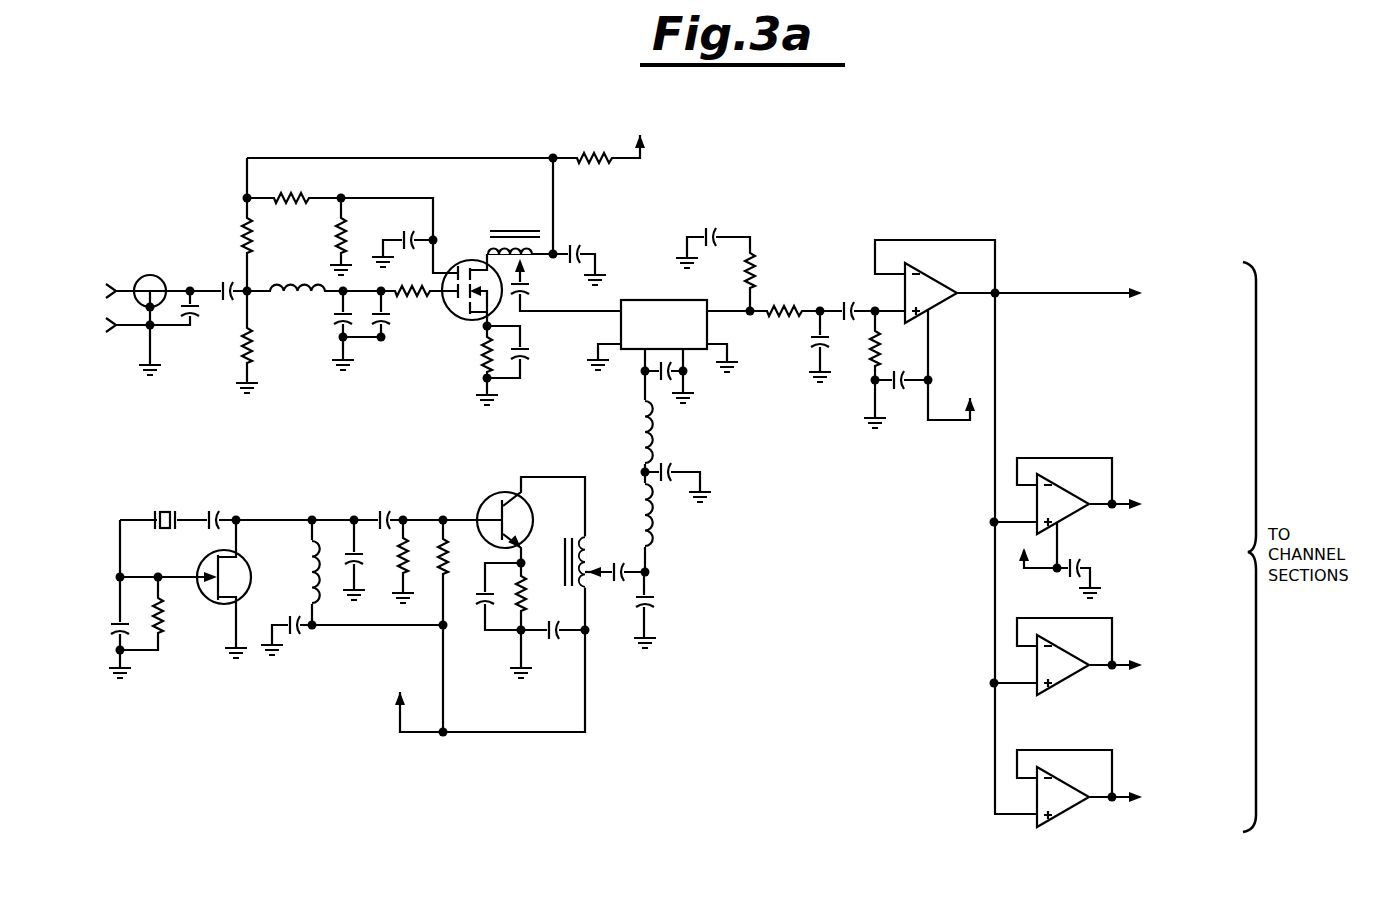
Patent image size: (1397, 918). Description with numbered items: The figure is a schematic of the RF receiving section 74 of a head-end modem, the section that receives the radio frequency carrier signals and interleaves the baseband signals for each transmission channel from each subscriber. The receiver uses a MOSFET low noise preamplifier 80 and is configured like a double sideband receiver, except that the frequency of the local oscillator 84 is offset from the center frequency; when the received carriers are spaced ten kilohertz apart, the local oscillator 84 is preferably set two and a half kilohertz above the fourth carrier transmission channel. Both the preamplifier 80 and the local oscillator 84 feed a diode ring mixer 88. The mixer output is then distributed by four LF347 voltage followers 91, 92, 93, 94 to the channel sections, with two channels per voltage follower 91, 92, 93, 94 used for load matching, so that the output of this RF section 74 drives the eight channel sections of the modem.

The MOSFET low noise preamplifier 80 is at (398, 360).
The local oscillator 84 is at (198, 712).
The RF receiving section 74 is at (704, 645).
The diode ring mixer 88 is at (720, 382).
The voltage follower 91 is at (935, 305).
The voltage follower 92 is at (1072, 514).
The voltage follower 93 is at (1072, 676).
The voltage follower 94 is at (1060, 812).